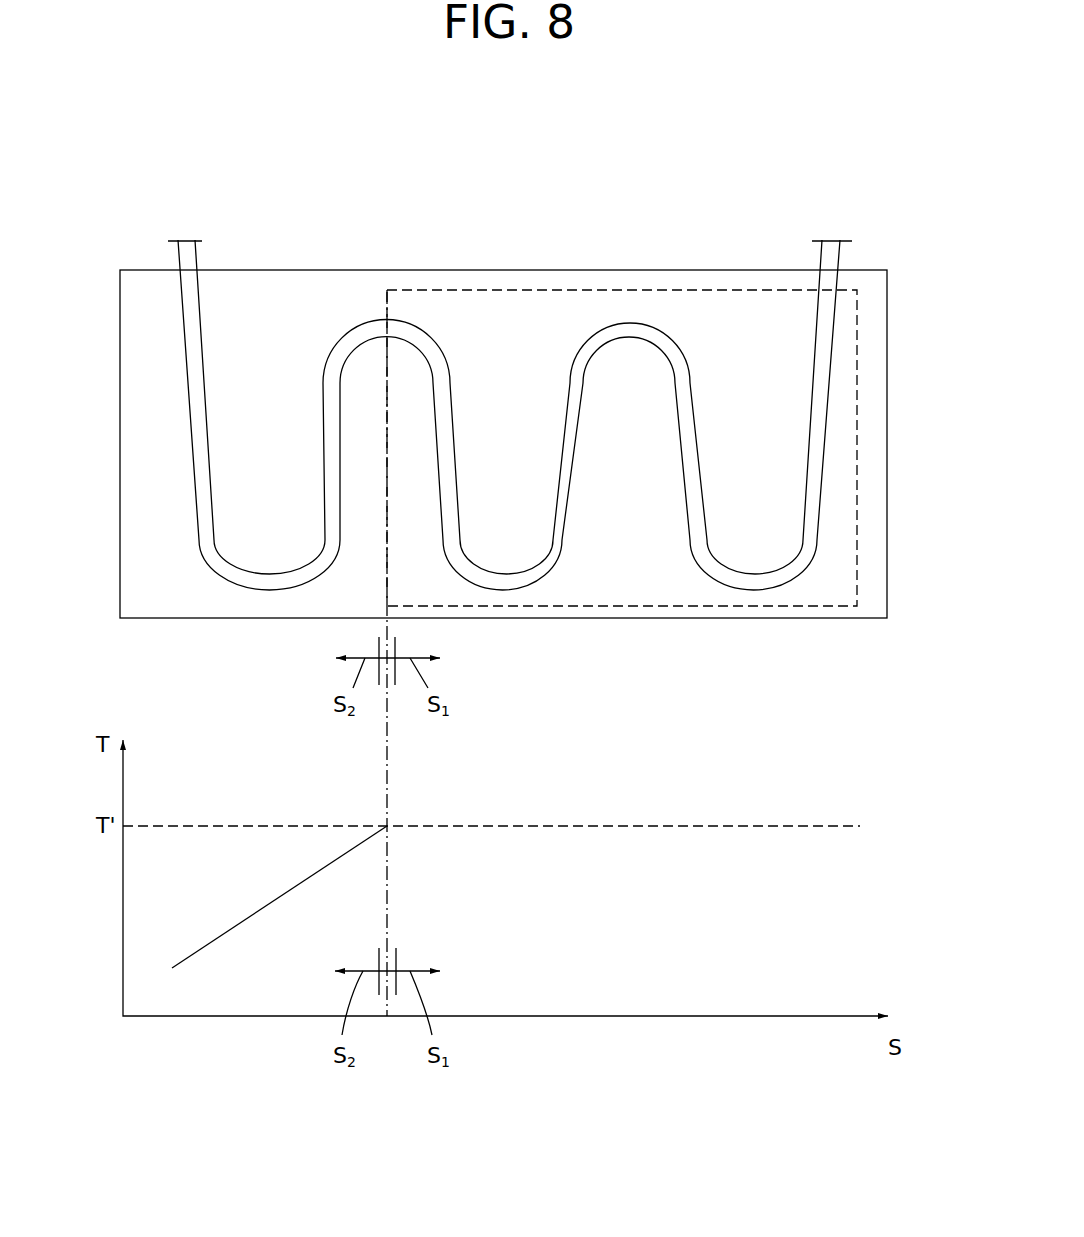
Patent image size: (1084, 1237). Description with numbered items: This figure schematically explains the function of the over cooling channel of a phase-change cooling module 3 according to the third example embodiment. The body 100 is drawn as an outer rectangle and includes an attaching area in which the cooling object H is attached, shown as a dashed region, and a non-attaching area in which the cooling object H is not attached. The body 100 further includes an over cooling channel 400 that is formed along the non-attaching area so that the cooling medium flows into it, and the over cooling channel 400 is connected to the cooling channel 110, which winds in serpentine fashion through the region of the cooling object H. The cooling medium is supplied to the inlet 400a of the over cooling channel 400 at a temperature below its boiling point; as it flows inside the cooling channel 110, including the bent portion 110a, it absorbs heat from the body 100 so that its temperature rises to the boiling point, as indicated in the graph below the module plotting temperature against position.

The phase-change cooling module 3 is at (366, 170).
The body 100 is at (847, 620).
The cooling object H is at (735, 290).
The cooling channel 110 is at (634, 322).
The heater tube bent portion 110a is at (386, 327).
The over cooling channel 400 is at (257, 583).
The inlet 400a is at (191, 268).